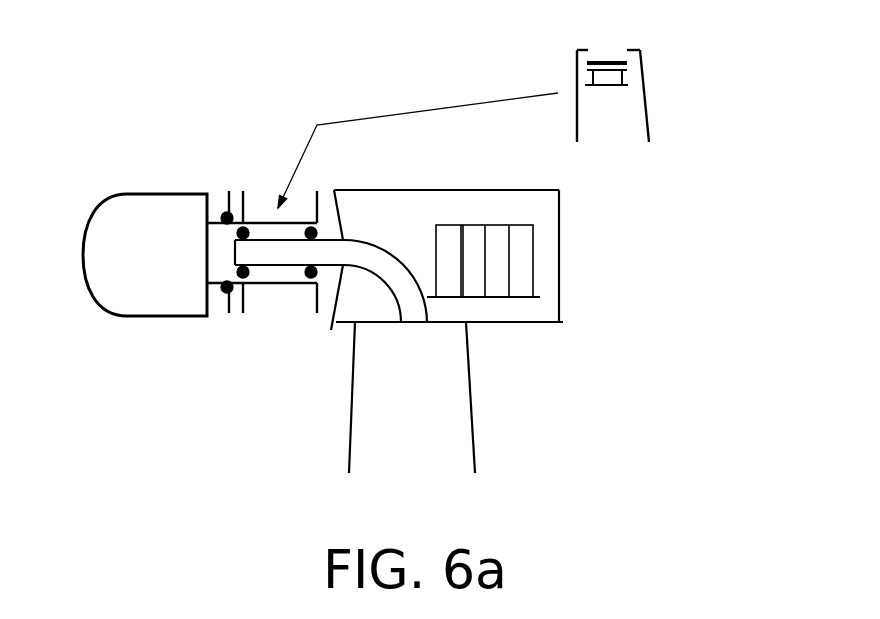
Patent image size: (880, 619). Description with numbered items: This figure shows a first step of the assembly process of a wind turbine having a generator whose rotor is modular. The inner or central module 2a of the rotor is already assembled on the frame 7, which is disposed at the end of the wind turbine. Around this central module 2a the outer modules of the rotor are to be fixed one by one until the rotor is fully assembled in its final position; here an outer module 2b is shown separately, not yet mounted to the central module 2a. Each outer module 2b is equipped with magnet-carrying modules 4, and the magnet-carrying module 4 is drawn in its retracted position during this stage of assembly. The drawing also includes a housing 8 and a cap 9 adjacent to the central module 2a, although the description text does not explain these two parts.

The central module 2a is at (315, 298).
The outer module 2b is at (645, 107).
The magnet-carrying module 4 is at (607, 62).
The frame 7 is at (395, 260).
The housing 8 is at (452, 418).
The protective cap 9 is at (113, 293).